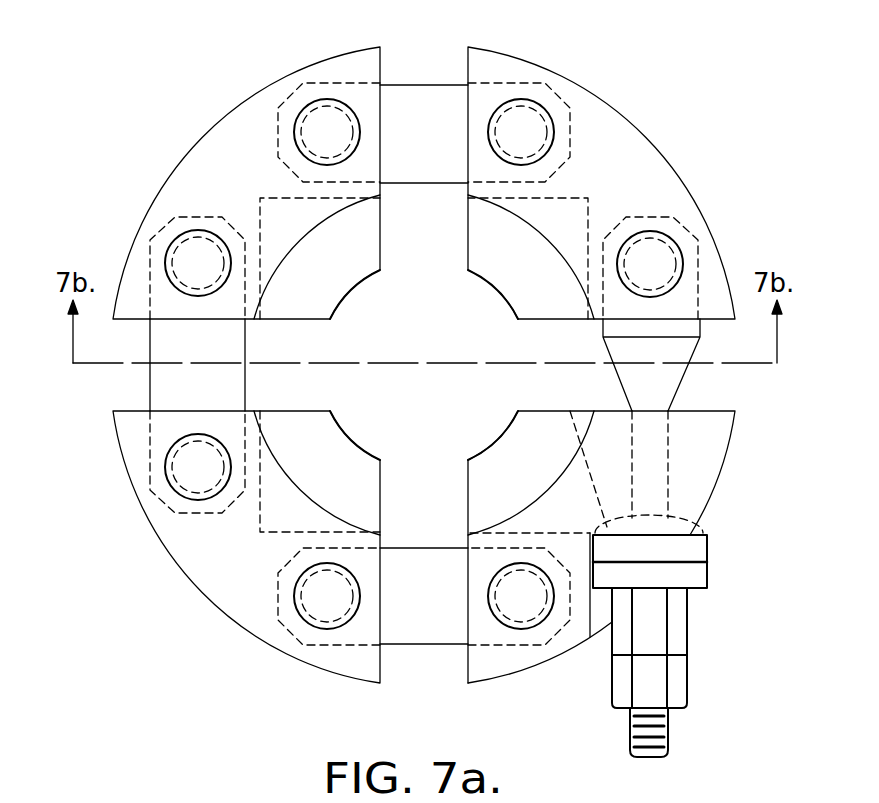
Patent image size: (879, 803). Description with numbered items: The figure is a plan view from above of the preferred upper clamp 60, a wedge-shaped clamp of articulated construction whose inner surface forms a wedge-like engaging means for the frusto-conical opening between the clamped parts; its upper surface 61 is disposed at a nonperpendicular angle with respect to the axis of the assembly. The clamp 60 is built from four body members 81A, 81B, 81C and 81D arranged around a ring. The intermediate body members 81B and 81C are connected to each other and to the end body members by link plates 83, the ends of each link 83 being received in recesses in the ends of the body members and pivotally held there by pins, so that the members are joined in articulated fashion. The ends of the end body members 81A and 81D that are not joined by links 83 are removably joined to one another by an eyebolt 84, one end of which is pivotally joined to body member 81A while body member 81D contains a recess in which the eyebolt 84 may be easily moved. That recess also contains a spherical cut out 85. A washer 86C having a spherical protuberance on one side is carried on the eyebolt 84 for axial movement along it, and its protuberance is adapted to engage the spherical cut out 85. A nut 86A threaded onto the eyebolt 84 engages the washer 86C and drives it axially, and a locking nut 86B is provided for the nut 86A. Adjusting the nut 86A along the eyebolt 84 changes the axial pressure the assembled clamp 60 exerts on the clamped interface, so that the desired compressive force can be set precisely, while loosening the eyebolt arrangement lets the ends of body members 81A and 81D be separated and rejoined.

The upper clamp 60 is at (172, 108).
The upper surface 61 is at (333, 285).
The end body member 81A is at (652, 142).
The intermediate body member 81B is at (290, 73).
The intermediate body member 81C is at (192, 582).
The end body member 81D is at (733, 433).
The link plate 83 is at (452, 84).
The eyebolt 84 is at (683, 380).
The spherical cut out 85 is at (693, 511).
The nut 86A is at (688, 627).
The locking nut 86B is at (688, 680).
The washer 86C is at (707, 548).